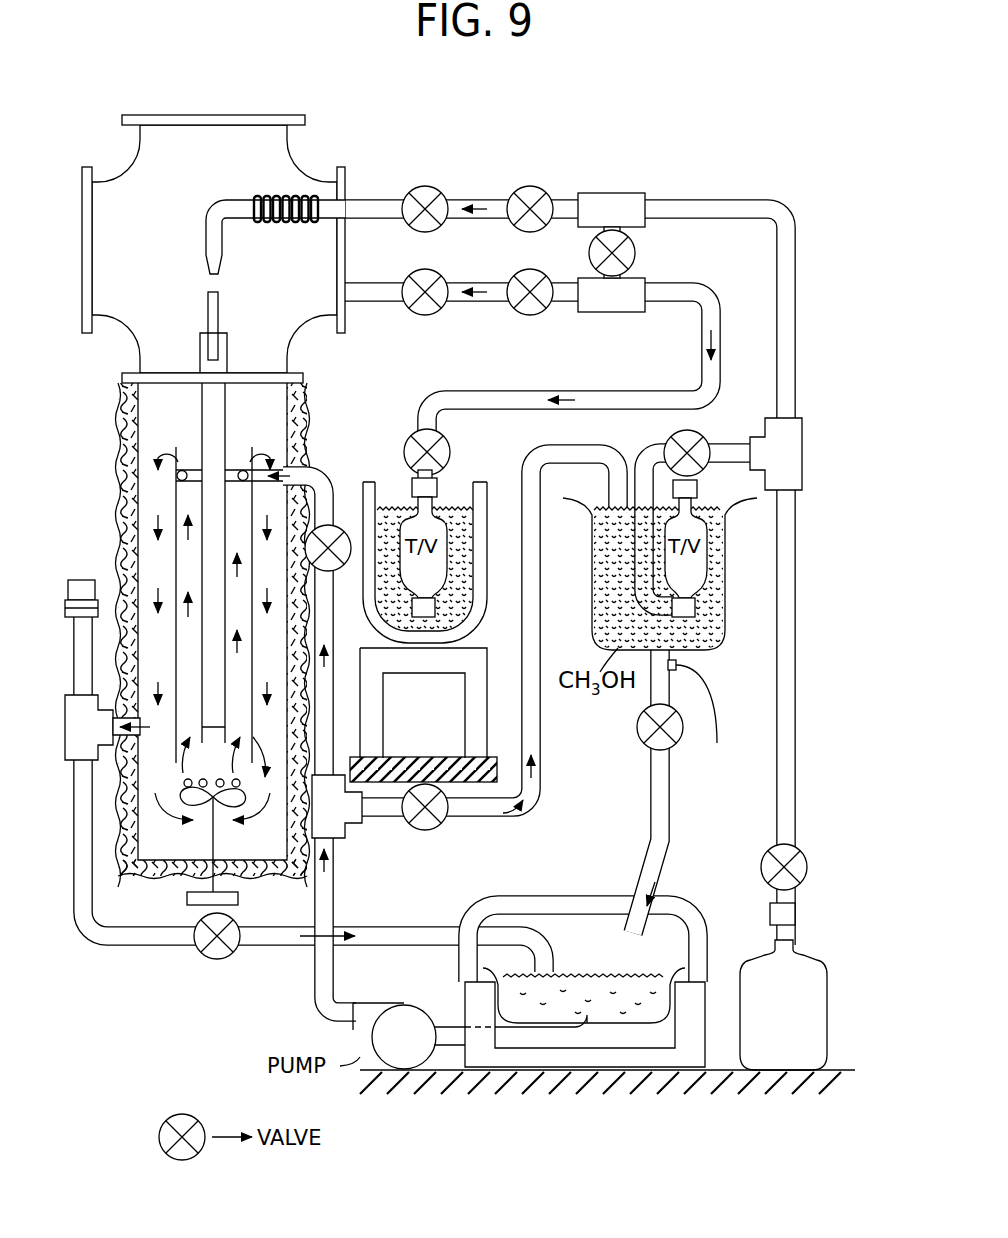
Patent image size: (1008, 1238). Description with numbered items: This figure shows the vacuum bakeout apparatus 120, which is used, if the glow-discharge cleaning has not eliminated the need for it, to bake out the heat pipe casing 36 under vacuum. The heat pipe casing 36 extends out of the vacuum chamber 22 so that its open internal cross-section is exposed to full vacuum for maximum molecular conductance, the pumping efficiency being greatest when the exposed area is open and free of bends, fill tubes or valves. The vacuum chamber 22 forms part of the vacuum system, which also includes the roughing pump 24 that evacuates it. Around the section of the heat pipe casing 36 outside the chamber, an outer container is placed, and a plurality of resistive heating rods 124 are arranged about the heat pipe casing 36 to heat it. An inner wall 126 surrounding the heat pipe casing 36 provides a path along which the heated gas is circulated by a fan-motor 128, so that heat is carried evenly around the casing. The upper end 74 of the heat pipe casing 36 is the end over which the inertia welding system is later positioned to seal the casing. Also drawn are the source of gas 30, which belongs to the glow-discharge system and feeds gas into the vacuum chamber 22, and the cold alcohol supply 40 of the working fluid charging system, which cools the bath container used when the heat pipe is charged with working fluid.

The vacuum chamber 22 is at (292, 152).
The resistive heating rods 124 is at (207, 310).
The upper end 74 is at (228, 348).
The heat pipe casing 36 is at (200, 388).
The inner wall 126 is at (175, 560).
The roughing pump 24 is at (188, 780).
The vacuum bakeout apparatus 120 is at (142, 893).
The fan-motor 128 is at (250, 946).
The source of gas 30 is at (828, 993).
The cold alcohol supply 40 is at (632, 1108).